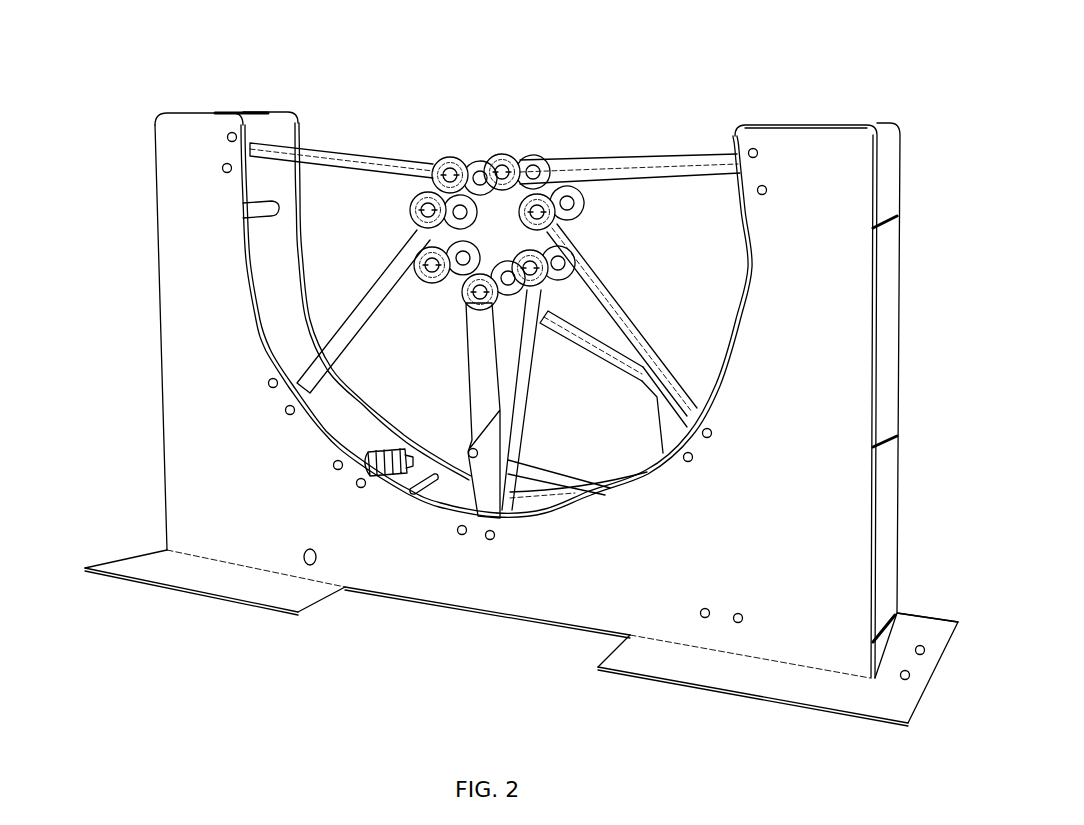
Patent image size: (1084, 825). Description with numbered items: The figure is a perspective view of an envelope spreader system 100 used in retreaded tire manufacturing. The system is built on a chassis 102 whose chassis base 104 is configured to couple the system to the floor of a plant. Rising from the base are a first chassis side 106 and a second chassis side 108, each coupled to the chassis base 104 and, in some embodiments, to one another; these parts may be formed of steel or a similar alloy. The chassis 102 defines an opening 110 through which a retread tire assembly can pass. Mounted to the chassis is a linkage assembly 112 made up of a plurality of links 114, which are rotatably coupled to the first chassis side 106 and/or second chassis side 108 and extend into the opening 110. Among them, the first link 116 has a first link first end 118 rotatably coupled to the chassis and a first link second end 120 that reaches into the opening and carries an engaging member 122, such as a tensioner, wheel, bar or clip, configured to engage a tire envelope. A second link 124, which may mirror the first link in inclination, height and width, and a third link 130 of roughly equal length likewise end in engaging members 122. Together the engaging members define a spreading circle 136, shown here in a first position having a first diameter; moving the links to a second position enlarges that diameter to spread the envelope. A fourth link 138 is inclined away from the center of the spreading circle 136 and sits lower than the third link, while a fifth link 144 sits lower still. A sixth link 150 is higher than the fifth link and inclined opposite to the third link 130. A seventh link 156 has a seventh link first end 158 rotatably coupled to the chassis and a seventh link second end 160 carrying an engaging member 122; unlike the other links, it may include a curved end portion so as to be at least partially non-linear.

The envelope spreader system 100 is at (146, 390).
The chassis 102 is at (174, 464).
The chassis base 104 is at (180, 573).
The first chassis side 106 is at (170, 197).
The second chassis side 108 is at (903, 130).
The opening 110 is at (697, 293).
The linkage assembly 112 is at (240, 112).
The plurality of links 114 is at (312, 142).
The first link 116 is at (367, 157).
The first link first end 118 is at (257, 150).
The first link second end 120 is at (416, 164).
The engaging member 122 is at (488, 158).
The second link 124 is at (588, 161).
The third link 130 is at (365, 283).
The spreading circle 136 is at (425, 228).
The fourth link 138 is at (467, 377).
The fifth link 144 is at (513, 388).
The sixth link 150 is at (608, 260).
The seventh link 156 is at (599, 358).
The seventh link first end 158 is at (634, 380).
The seventh link second end 160 is at (533, 290).